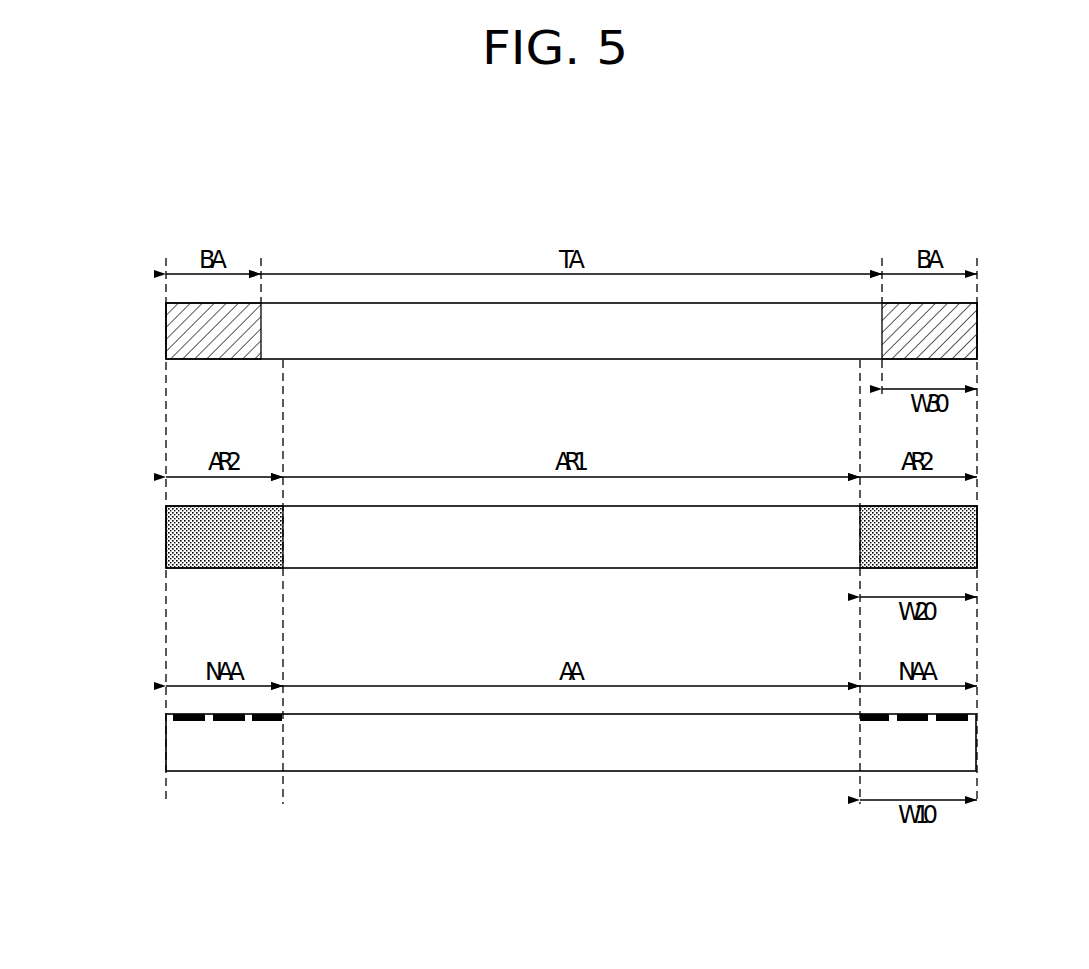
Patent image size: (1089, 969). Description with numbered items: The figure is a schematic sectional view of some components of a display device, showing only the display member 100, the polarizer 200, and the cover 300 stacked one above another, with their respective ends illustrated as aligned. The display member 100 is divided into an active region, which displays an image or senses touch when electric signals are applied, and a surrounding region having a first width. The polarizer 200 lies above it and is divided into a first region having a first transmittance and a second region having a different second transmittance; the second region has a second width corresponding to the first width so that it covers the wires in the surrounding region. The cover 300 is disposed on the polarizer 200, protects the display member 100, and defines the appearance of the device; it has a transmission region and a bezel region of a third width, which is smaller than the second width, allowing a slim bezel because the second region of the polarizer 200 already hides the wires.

The cover 300 is at (977, 330).
The polarizer 200 is at (977, 537).
The display member 100 is at (966, 748).